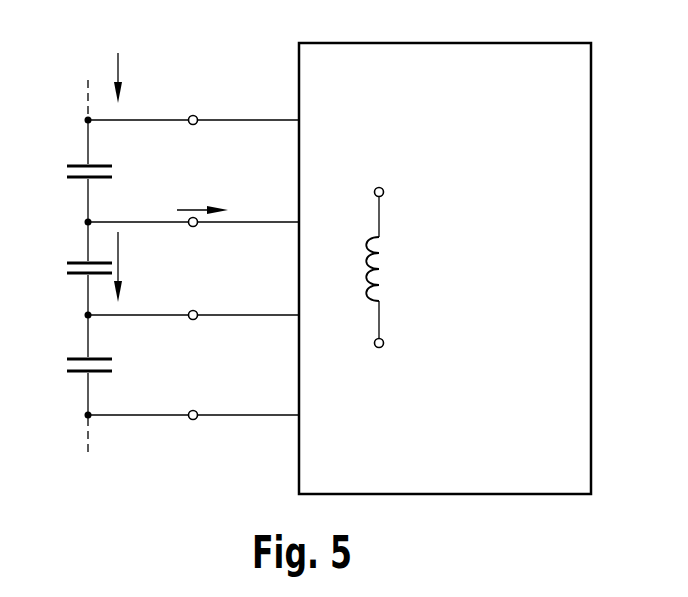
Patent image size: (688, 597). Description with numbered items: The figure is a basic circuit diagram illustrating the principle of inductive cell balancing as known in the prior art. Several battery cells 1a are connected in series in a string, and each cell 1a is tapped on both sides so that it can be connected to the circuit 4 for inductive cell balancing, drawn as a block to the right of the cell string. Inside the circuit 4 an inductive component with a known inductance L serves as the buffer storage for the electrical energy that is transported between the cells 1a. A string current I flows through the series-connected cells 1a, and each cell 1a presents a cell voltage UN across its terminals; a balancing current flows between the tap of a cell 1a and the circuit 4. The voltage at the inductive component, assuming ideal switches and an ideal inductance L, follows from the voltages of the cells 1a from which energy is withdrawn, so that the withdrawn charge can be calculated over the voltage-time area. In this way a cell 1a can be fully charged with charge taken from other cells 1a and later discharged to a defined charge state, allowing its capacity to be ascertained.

The battery cell 1a is at (82, 180).
The circuit for inductive cell balancing 4 is at (560, 268).
The inductance L is at (410, 184).
The string current I is at (120, 62).
The cell voltage UN is at (120, 258).